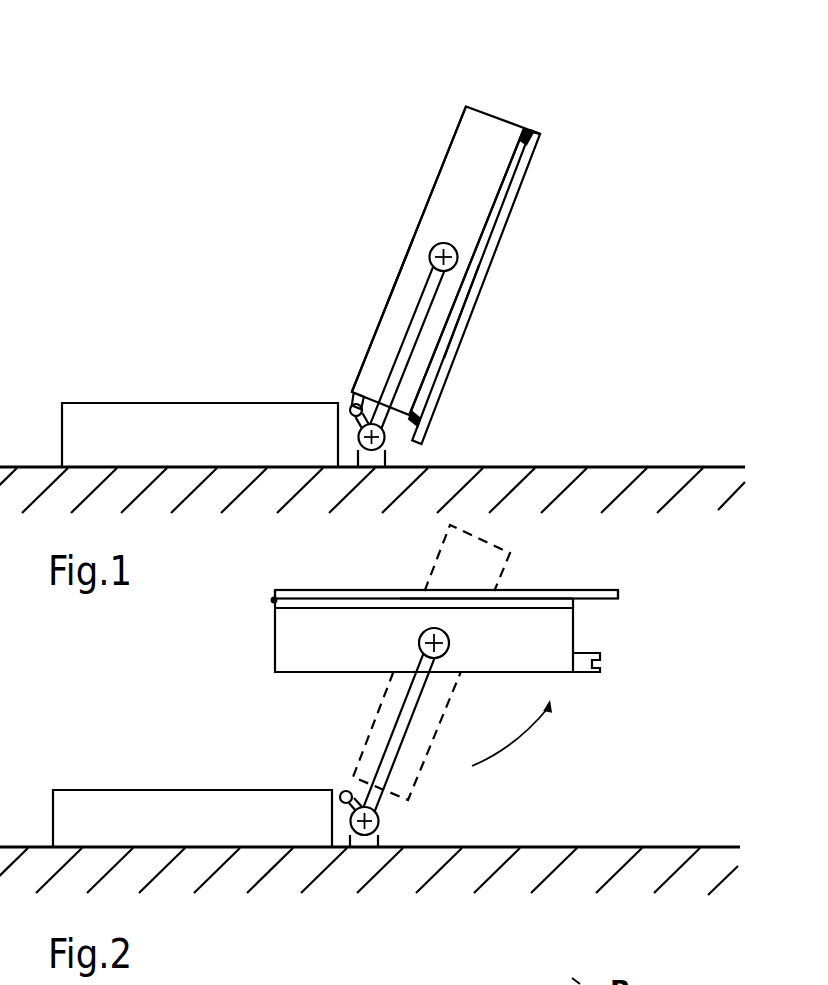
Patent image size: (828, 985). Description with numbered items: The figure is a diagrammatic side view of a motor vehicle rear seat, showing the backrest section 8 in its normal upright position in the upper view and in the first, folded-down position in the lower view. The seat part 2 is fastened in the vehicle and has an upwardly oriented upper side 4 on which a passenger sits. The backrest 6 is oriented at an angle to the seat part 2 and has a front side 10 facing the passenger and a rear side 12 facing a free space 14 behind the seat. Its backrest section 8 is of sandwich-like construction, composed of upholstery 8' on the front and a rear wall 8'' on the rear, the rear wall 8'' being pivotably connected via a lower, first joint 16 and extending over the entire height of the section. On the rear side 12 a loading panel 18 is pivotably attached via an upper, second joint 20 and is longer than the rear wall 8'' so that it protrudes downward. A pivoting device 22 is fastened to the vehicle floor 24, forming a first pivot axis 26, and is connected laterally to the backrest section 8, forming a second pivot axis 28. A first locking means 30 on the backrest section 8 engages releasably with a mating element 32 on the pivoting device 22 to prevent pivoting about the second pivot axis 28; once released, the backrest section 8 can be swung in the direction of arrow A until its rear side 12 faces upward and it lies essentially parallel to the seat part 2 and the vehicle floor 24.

In FIG. 1, the seat part 2 is at (160, 430).
In FIG. 2, the seat part 2 is at (132, 843).
In FIG. 1, the upper side 4 is at (213, 403).
In FIG. 2, the upper side 4 is at (113, 790).
In FIG. 1, the backrest 6 is at (390, 141).
In FIG. 2, the backrest 6 is at (352, 748).
In FIG. 1, the backrest section 8 is at (446, 229).
In FIG. 2, the backrest section 8 is at (359, 631).
In FIG. 1, the upholstery 8' is at (422, 200).
In FIG. 2, the upholstery 8' is at (378, 587).
In FIG. 1, the rear wall 8'' is at (487, 216).
In FIG. 2, the rear wall 8'' is at (489, 596).
In FIG. 1, the front side 10 is at (404, 255).
In FIG. 2, the front side 10 is at (483, 673).
In FIG. 1, the rear side 12 is at (493, 242).
In FIG. 2, the rear side 12 is at (550, 597).
In FIG. 1, the free space 14 is at (665, 347).
In FIG. 2, the free space 14 is at (620, 762).
In FIG. 1, the first joint 16 is at (413, 416).
In FIG. 2, the first joint 16 is at (578, 612).
In FIG. 1, the loading panel 18 is at (462, 332).
In FIG. 2, the loading panel 18 is at (520, 597).
In FIG. 1, the second joint 20 is at (533, 128).
In FIG. 2, the second joint 20 is at (274, 598).
In FIG. 1, the pivoting device 22 is at (387, 342).
In FIG. 2, the pivoting device 22 is at (383, 720).
In FIG. 1, the vehicle floor 24 is at (578, 466).
In FIG. 2, the vehicle floor 24 is at (632, 847).
In FIG. 1, the first pivot axis 26 is at (358, 437).
In FIG. 2, the first pivot axis 26 is at (378, 822).
In FIG. 1, the second pivot axis 28 is at (431, 250).
In FIG. 2, the second pivot axis 28 is at (449, 636).
In FIG. 1, the first locking means 30 is at (353, 396).
In FIG. 2, the first locking means 30 is at (592, 653).
In FIG. 1, the mating element 32 is at (350, 404).
In FIG. 2, the mating element 32 is at (340, 795).